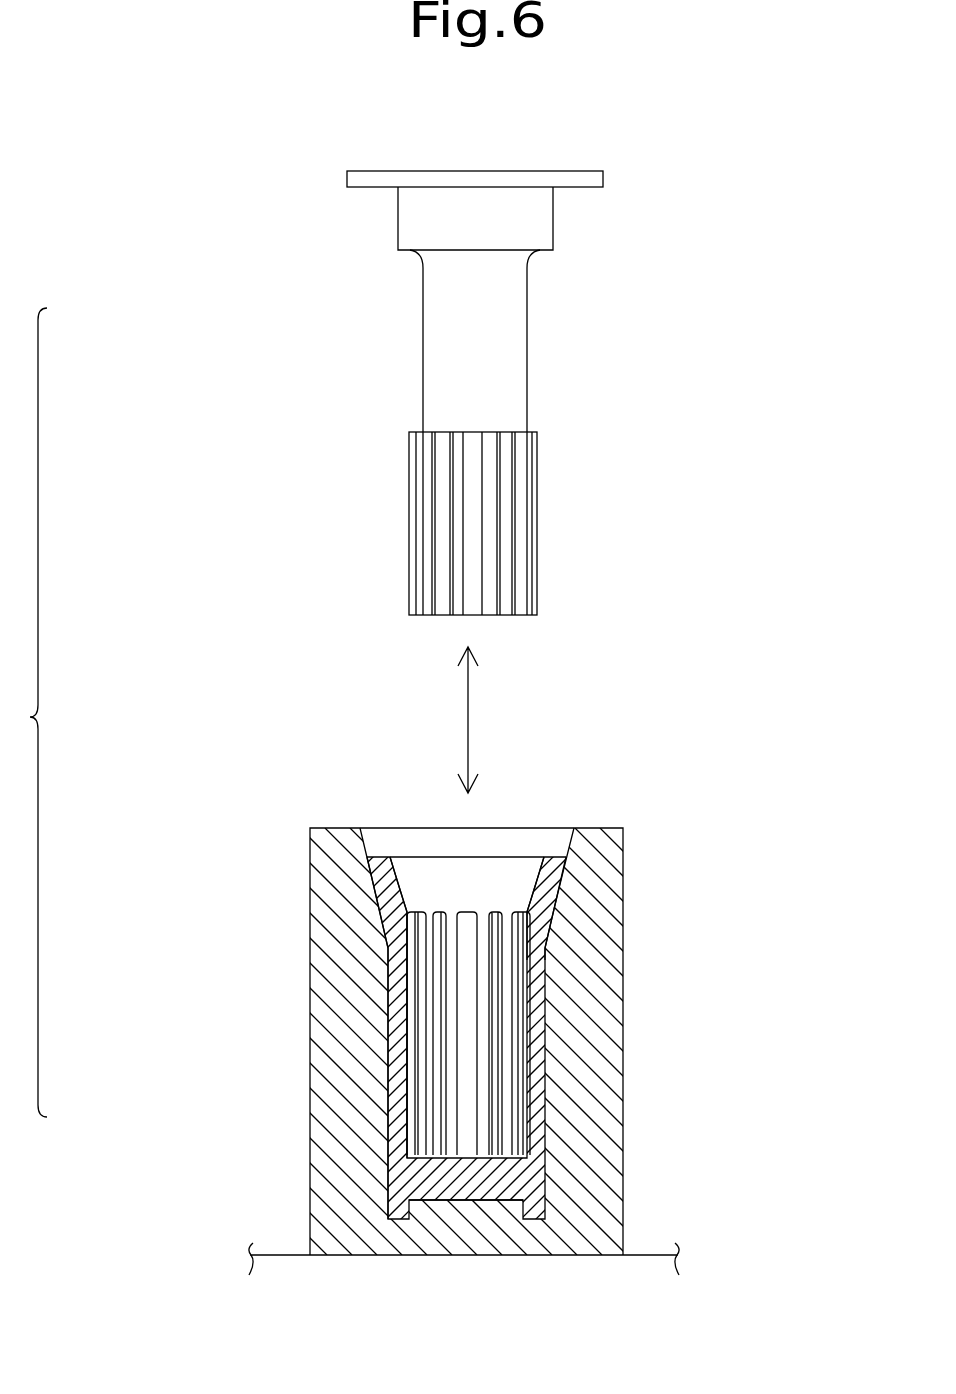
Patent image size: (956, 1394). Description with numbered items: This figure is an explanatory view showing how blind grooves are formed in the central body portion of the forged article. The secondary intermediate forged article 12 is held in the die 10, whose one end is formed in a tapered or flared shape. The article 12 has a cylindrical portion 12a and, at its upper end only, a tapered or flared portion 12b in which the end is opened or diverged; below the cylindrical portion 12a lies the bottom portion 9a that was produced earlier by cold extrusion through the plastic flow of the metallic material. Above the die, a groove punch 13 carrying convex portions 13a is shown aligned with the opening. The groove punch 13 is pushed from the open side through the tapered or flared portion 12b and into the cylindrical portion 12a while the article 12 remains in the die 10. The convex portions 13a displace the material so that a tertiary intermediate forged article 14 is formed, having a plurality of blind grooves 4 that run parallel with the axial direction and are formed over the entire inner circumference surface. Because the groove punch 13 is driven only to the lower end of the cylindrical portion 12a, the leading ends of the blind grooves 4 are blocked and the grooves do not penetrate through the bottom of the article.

The groove punch 13 is at (513, 338).
The convex portions 13a is at (505, 511).
The die 10 is at (587, 1071).
The secondary intermediate forged article 12 is at (216, 857).
The cylindrical portion 12a is at (395, 1027).
The tapered or flared portion 12b is at (395, 893).
The tertiary intermediate forged article 14 is at (545, 922).
The blind grooves 4 is at (468, 997).
The bottom portion 9a is at (480, 1183).